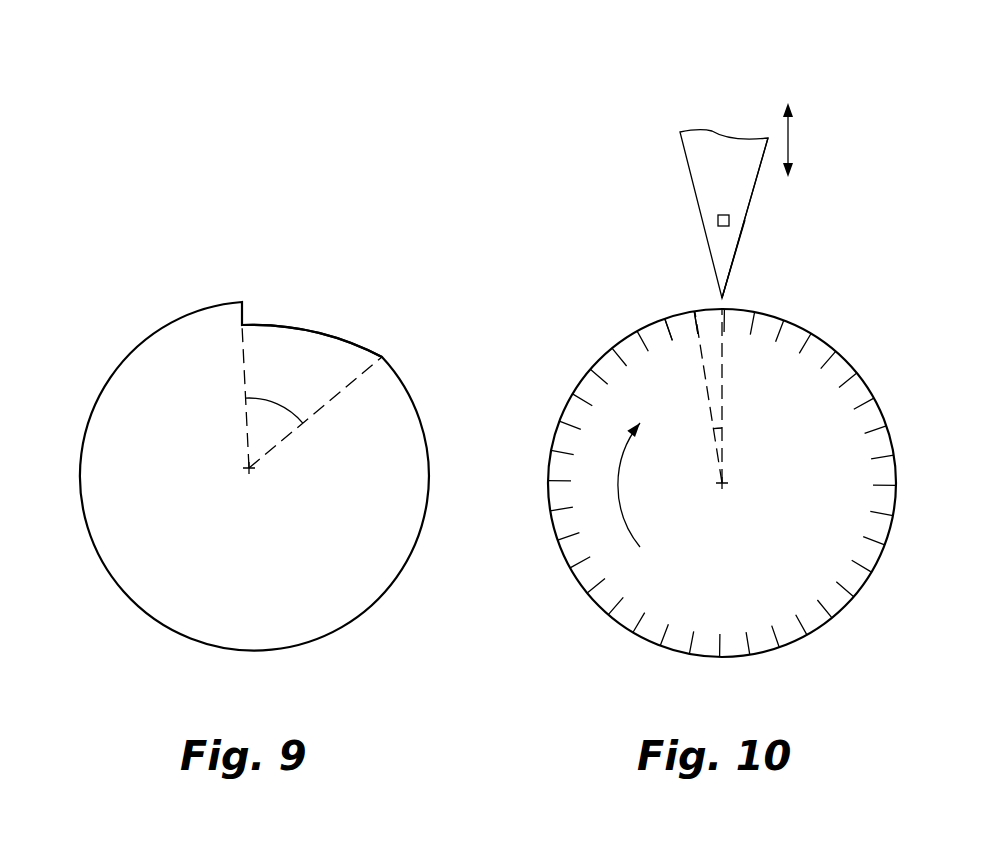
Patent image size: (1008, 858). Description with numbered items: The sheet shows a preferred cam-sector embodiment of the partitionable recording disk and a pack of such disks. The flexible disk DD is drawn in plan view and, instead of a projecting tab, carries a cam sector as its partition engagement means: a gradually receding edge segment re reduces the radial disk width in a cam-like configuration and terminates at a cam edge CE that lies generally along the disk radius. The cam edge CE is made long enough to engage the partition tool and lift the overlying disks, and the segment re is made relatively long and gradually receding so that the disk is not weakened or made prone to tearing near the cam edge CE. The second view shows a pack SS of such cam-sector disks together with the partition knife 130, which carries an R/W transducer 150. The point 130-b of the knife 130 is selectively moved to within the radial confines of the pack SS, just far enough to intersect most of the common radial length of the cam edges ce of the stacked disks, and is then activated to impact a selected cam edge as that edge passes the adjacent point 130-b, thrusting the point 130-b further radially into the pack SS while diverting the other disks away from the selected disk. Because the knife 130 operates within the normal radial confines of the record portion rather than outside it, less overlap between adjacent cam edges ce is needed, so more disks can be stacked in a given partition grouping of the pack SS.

In FIG. 9, the flexible disk DD is at (160, 322).
In FIG. 9, the cam edge CE is at (243, 316).
In FIG. 9, the edge segment re is at (317, 330).
In FIG. 10, the partition knife 130 is at (687, 152).
In FIG. 10, the R/W transducer 150 is at (718, 220).
In FIG. 10, the trailing edge TR is at (742, 232).
In FIG. 10, the knife point 130-b is at (735, 268).
In FIG. 10, the cam edges ce is at (700, 313).
In FIG. 10, the disk pack SS is at (598, 355).